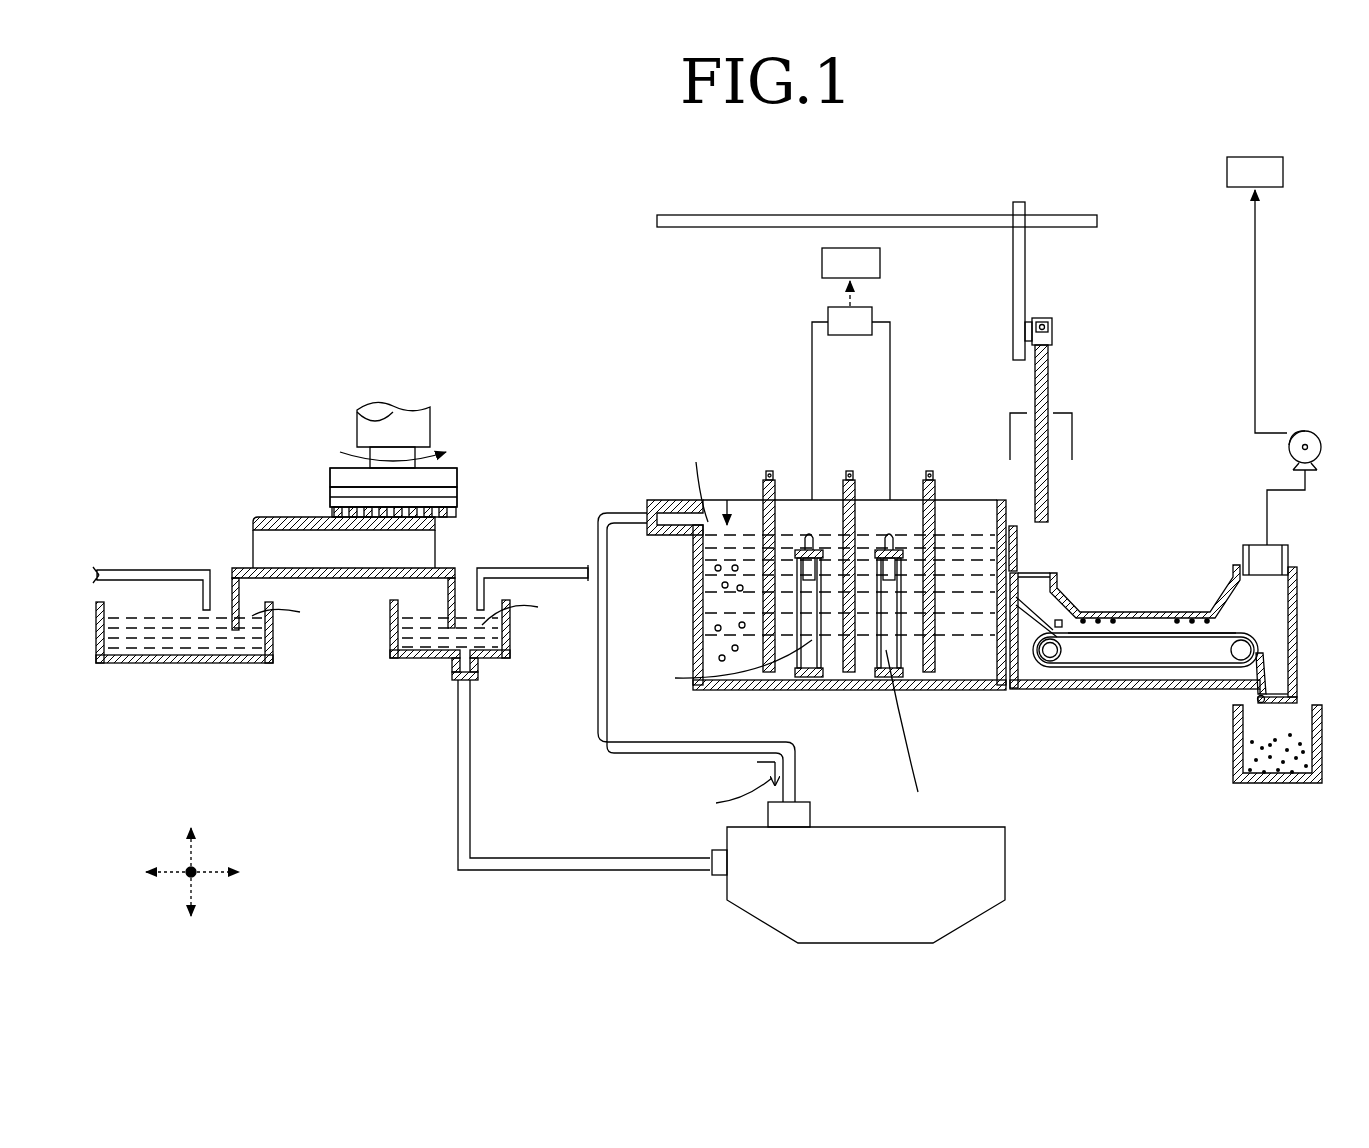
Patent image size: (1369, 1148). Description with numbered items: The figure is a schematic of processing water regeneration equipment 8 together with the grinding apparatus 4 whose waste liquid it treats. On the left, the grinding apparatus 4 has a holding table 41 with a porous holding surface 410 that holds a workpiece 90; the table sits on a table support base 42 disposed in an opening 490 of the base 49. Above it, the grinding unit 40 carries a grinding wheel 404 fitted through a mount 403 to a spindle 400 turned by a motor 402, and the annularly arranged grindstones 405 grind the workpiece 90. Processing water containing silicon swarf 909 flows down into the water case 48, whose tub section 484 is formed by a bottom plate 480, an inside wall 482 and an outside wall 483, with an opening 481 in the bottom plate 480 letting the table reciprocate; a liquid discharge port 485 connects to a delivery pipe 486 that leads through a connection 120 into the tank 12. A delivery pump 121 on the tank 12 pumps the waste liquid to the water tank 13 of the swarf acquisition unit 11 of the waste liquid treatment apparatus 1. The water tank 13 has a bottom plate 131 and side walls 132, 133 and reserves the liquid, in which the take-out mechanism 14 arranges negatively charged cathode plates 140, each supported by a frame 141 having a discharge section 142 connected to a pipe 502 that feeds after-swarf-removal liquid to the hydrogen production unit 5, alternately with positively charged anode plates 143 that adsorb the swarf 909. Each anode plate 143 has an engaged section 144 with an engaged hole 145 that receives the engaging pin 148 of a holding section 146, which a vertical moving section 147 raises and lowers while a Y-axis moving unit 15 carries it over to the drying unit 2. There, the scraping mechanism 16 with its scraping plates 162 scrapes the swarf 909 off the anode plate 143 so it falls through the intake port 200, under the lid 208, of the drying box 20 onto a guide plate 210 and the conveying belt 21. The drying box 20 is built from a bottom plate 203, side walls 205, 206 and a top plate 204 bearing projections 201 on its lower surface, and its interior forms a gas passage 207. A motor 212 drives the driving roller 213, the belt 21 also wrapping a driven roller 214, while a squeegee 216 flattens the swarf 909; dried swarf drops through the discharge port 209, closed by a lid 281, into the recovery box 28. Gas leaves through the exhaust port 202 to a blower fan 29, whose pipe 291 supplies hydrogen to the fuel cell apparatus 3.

The waste liquid treatment apparatus 1 is at (648, 283).
The drying unit 2 is at (1140, 506).
The fuel cell apparatus 3 is at (880, 264).
The grinding apparatus 4 is at (267, 365).
The hydrogen production unit 5 is at (872, 318).
The processing water regeneration equipment 8 is at (857, 194).
The swarf acquisition unit 11 is at (730, 380).
The tank 12 is at (1018, 857).
The water tank 13 is at (813, 607).
The take-out mechanism 14 is at (1062, 315).
The Y-axis moving unit 15 is at (735, 228).
The scraping mechanism 16 is at (1012, 405).
The drying box 20 is at (1145, 668).
The conveying belt 21 is at (1140, 632).
The recovery box 28 is at (1268, 790).
The blower fan 29 is at (1303, 430).
The grinding unit 40 is at (340, 395).
The holding table 41 is at (258, 550).
The table support base 42 is at (340, 580).
The water case 48 is at (143, 742).
The base 49 is at (128, 575).
The workpiece 90 is at (455, 513).
The outlet port 120 is at (718, 872).
The delivery pump 121 is at (807, 815).
The bottom plate 131 is at (848, 702).
The side wall 132 is at (748, 526).
The side wall 133 is at (700, 613).
The cathode plate 140 is at (812, 640).
The frame 141 is at (809, 538).
The discharge section 142 is at (770, 480).
The anode plate 143 is at (768, 565).
The engaged section 144 is at (849, 470).
The engaged hole 145 is at (898, 550).
The holding section 146 is at (1021, 305).
The vertical moving section 147 is at (1018, 330).
The engaging pin 148 is at (1052, 325).
The scraping plate 162 is at (1072, 433).
The intake port 200 is at (1036, 580).
The projection 201 is at (1180, 620).
The exhaust port 202 is at (1268, 583).
The bottom plate 203 is at (1168, 690).
The top plate 204 is at (1202, 604).
The side wall 205 is at (1108, 676).
The side wall 206 is at (1298, 600).
The gas passage 207 is at (1168, 633).
The lid 208 is at (1012, 545).
The discharge port 209 is at (1270, 705).
The guide plate 210 is at (1048, 600).
The motor 212 is at (1050, 660).
The driving roller 213 is at (1050, 665).
The driven roller 214 is at (1240, 652).
The squeegee 216 is at (1060, 634).
The lid 281 is at (1278, 705).
The pipe 291 is at (1252, 283).
The spindle 400 is at (397, 418).
The motor 402 is at (410, 430).
The mount 403 is at (330, 478).
The grinding wheel 404 is at (316, 494).
The grindstone 405 is at (330, 508).
The holding surface 410 is at (300, 519).
The bottom plate 480 is at (232, 660).
The opening 481 is at (340, 582).
The inside wall 482 is at (238, 605).
The outside wall 483 is at (104, 640).
The tub section 484 is at (205, 640).
The liquid discharge port 485 is at (470, 682).
The delivery pipe 486 is at (560, 865).
The opening 490 is at (490, 574).
The pipe 502 is at (812, 362).
The silicon swarf 909 is at (725, 576).